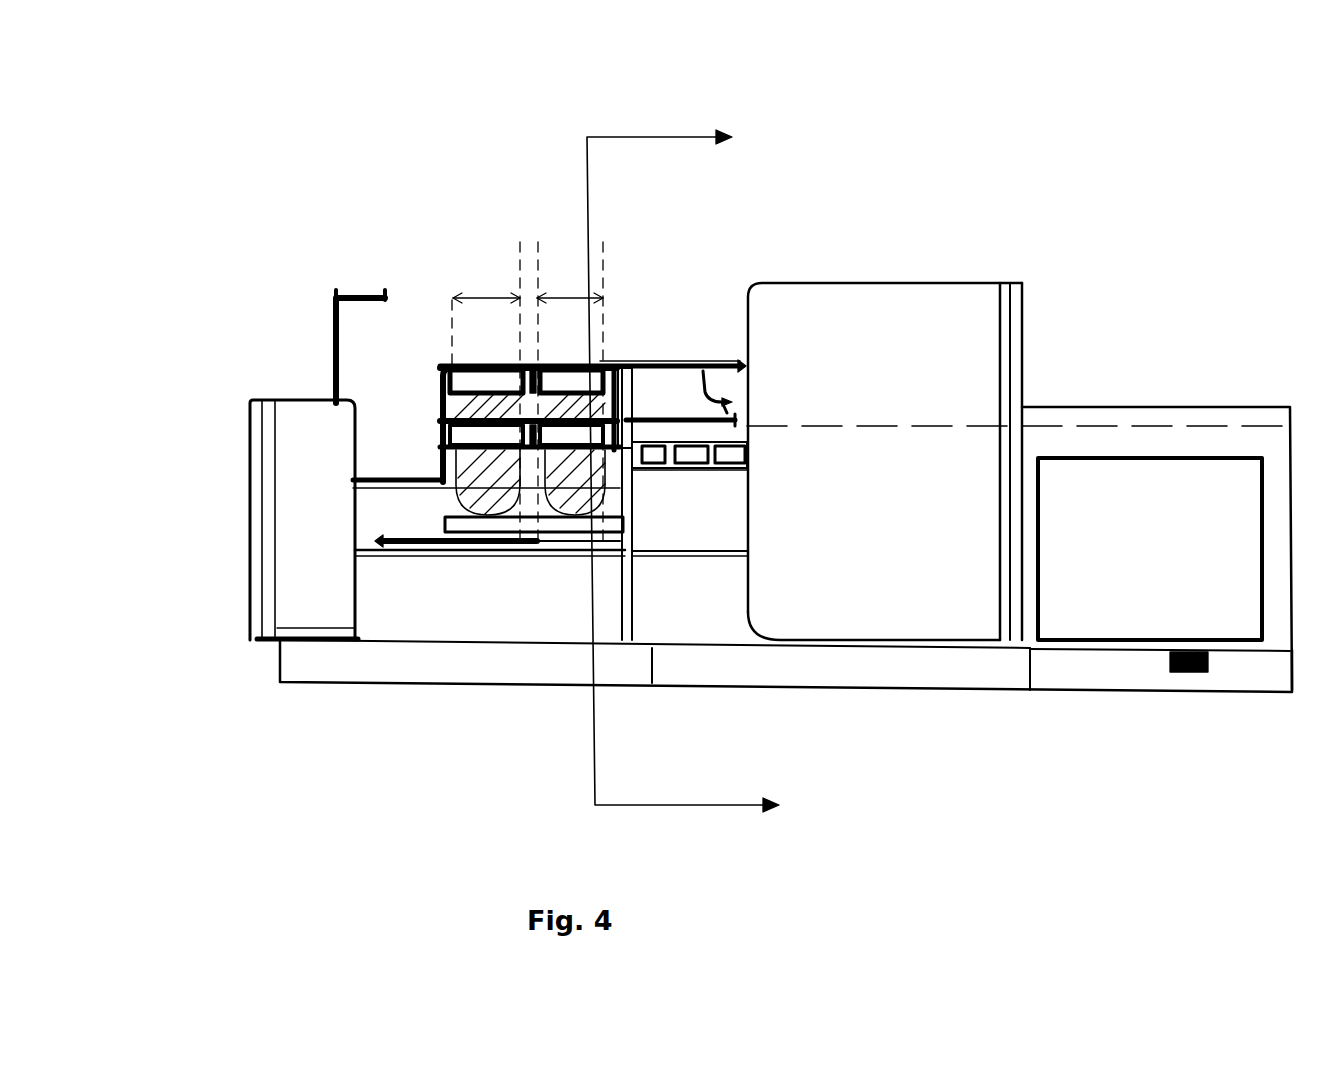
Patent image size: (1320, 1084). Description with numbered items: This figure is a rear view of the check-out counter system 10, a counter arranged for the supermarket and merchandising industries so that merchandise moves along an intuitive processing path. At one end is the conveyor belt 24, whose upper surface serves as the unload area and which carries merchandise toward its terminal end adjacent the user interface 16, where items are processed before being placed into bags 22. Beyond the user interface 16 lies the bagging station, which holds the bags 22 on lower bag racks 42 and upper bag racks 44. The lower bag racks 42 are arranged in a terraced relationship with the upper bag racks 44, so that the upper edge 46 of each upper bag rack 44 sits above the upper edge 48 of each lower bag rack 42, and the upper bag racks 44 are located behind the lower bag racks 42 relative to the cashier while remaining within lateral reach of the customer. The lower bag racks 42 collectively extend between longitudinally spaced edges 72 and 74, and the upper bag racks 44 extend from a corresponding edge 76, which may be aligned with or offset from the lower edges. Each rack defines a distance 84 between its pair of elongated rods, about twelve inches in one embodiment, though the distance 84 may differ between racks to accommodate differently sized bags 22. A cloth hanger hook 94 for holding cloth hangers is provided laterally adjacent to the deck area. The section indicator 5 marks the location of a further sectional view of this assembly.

The check-out counter system 10 is at (1052, 316).
The user interface 16 is at (682, 418).
The bags 22 is at (452, 296).
The conveyor belt 24 is at (1220, 430).
The lower bag racks 42 is at (545, 470).
The upper bag racks 44 is at (440, 395).
The upper edge of upper bag racks 46 is at (600, 365).
The upper edge of lower bag racks 48 is at (625, 378).
The longitudinally spaced edge of lower bag racks 72 is at (437, 383).
The longitudinally spaced edge of lower bag racks 74 is at (622, 420).
The longitudinally spaced edge of upper bag racks 76 is at (443, 368).
The distance 84 is at (598, 380).
The cloth hanger hook 94 is at (350, 296).
The section line 5- 5 is at (693, 468).